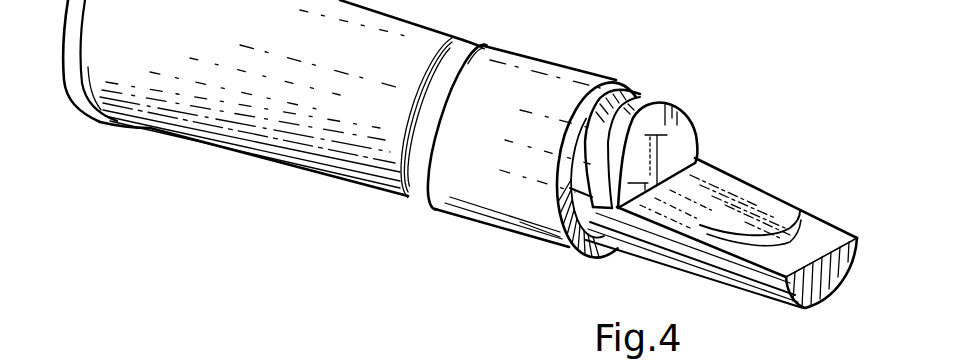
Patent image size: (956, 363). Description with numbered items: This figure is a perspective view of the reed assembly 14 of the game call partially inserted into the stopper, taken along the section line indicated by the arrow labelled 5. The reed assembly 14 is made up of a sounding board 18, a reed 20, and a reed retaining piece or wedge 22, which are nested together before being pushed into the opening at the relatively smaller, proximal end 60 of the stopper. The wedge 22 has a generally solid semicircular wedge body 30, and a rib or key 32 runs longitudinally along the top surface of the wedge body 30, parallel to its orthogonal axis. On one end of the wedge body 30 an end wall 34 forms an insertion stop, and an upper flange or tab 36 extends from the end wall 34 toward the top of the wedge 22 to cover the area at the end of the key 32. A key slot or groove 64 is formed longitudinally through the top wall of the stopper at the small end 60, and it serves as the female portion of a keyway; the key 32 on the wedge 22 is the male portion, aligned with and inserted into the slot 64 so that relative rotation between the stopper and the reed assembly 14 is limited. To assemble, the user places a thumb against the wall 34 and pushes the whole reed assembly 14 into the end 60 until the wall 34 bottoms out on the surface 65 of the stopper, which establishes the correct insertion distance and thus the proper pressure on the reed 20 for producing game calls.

The section line 5- 5 is at (850, 272).
The reed assembly section 14 is at (657, 80).
The sounding board 18 is at (818, 218).
The reed 20 is at (747, 177).
The reed retaining piece or wedge 22 is at (700, 130).
The wedge body 30 is at (583, 160).
The rib or key 32 is at (585, 108).
The end wall 34 is at (639, 177).
The upper flange or tab 36 is at (656, 151).
The small end 60 is at (577, 265).
The key slot or groove 64 is at (633, 98).
The surface 65 is at (553, 233).